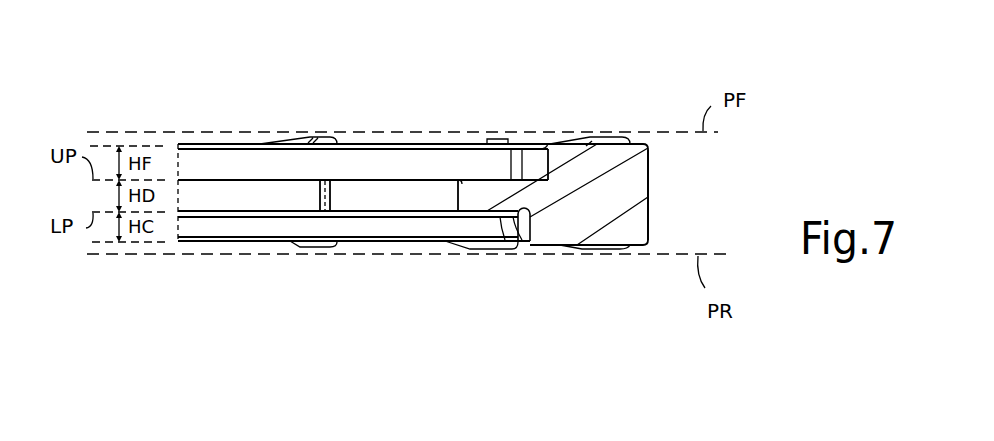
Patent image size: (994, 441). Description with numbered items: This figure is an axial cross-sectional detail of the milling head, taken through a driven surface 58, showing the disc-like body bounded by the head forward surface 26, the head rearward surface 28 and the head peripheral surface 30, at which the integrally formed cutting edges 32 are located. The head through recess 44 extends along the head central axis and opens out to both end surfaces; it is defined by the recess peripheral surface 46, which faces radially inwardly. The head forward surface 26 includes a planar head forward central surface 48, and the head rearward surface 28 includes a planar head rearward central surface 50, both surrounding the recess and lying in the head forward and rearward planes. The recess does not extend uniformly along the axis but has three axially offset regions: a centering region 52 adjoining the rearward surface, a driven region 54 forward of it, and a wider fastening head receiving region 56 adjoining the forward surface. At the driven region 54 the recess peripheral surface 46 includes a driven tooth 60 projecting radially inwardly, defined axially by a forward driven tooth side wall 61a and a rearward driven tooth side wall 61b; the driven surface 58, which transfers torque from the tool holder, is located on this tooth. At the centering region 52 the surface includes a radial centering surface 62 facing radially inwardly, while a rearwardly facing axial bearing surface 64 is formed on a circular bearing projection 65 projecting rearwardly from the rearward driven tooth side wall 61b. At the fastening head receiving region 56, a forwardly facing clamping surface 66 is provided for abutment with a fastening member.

The head forward surface 26 is at (617, 143).
The head rearward surface 28 is at (627, 260).
The head peripheral surface 30 is at (653, 212).
The cutting edges 32 is at (650, 171).
The head through recess 44 is at (237, 152).
The recess peripheral surface 46 is at (545, 144).
The head forward central surface 48 is at (590, 146).
The head rearward central surface 50 is at (558, 249).
The centering region 52 is at (354, 228).
The driven region 54 is at (348, 195).
The fastening head receiving region 56 is at (363, 162).
The driven surface 58 is at (390, 198).
The driven tooth 60 is at (490, 185).
The forward driven tooth side wall 61a is at (512, 144).
The rearward driven tooth side wall 61b is at (440, 215).
The radial centering surface 62 is at (518, 248).
The axial bearing surface 64 is at (498, 243).
The circular bearing projection 65 is at (469, 226).
The clamping surface 66 is at (521, 144).